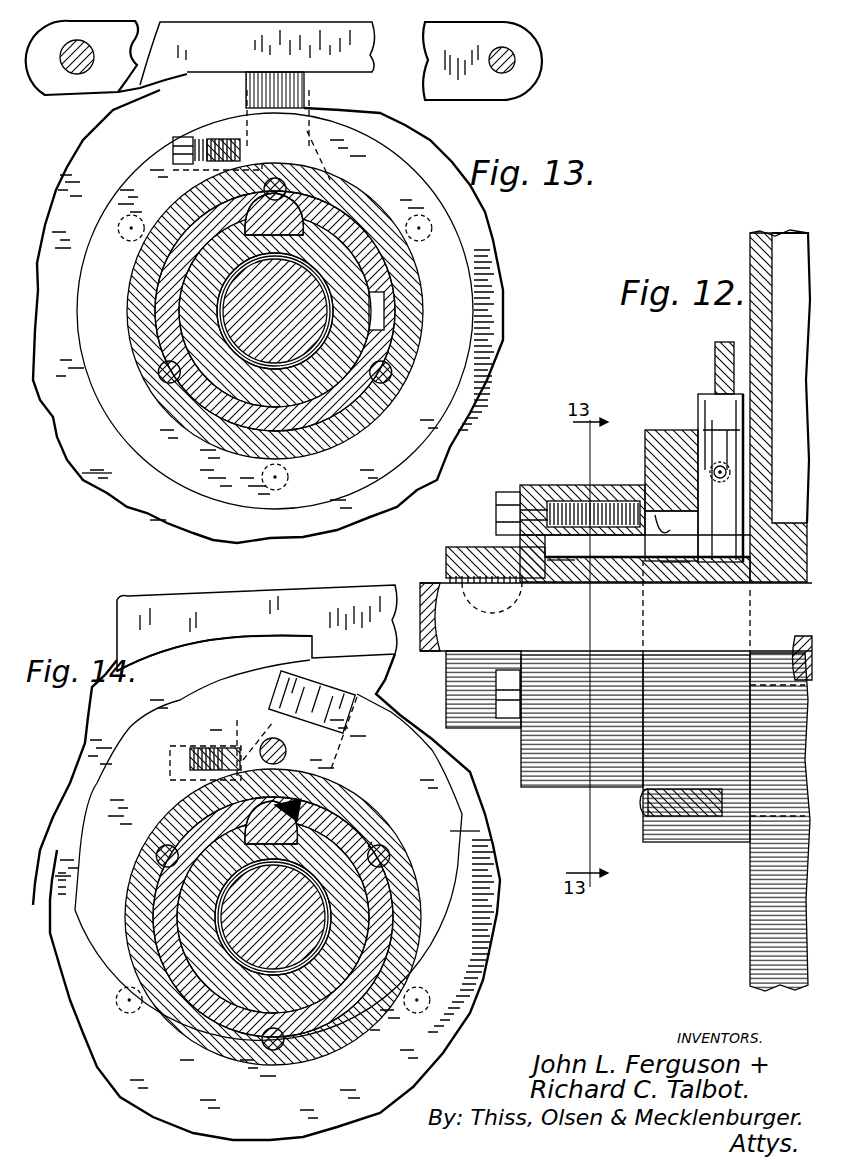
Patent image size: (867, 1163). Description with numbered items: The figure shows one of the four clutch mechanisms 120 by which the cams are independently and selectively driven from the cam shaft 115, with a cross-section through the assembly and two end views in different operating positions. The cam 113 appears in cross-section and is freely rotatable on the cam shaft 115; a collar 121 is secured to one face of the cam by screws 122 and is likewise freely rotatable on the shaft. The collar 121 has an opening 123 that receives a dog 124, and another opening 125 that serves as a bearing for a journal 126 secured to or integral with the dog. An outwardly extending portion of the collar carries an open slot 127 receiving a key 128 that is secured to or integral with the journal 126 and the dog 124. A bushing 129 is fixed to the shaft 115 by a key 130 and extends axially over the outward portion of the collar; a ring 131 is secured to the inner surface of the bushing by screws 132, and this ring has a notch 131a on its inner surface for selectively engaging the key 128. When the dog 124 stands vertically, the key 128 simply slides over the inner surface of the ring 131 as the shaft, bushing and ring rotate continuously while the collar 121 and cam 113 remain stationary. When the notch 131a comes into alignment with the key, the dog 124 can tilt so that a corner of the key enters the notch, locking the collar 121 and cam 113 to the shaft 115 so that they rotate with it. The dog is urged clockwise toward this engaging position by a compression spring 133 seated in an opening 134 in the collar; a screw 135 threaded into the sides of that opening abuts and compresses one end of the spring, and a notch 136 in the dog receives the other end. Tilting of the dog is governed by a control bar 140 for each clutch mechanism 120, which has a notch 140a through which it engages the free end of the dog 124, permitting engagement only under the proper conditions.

In FIG. 13, the cam 113 is at (284, 282).
In FIG. 14, the cam 113 is at (266, 897).
In FIG. 12, the cam 113 is at (752, 244).
In FIG. 13, the cam shaft 115 is at (275, 311).
In FIG. 14, the cam shaft 115 is at (273, 917).
In FIG. 12, the cam shaft 115 is at (558, 623).
In FIG. 12, the clutch mechanism 120 is at (604, 405).
In FIG. 13, the collar 121 is at (326, 311).
In FIG. 14, the collar 121 is at (331, 917).
In FIG. 12, the collar 121 is at (665, 430).
In FIG. 13, the screws 122 is at (292, 354).
In FIG. 14, the screws 122 is at (320, 864).
In FIG. 12, the screws 122 is at (646, 808).
In FIG. 14, the opening 123 is at (225, 748).
In FIG. 12, the opening 123 is at (704, 457).
In FIG. 13, the dog 124 is at (306, 92).
In FIG. 14, the dog 124 is at (360, 712).
In FIG. 12, the dog 124 is at (705, 394).
In FIG. 12, the opening 125 is at (685, 513).
In FIG. 12, the journal 126 is at (672, 562).
In FIG. 12, the open slot 127 is at (576, 562).
In FIG. 13, the key 128 is at (295, 290).
In FIG. 14, the key 128 is at (273, 907).
In FIG. 12, the key 128 is at (635, 558).
In FIG. 14, the bushing 129 is at (400, 828).
In FIG. 12, the bushing 129 is at (462, 549).
In FIG. 12, the key 130 is at (492, 609).
In FIG. 13, the ring 131 is at (309, 311).
In FIG. 14, the ring 131 is at (306, 917).
In FIG. 12, the ring 131 is at (620, 485).
In FIG. 13, the notch 131a is at (421, 305).
In FIG. 14, the notch 131a is at (342, 793).
In FIG. 13, the screws 132 is at (268, 289).
In FIG. 14, the screws 132 is at (300, 966).
In FIG. 12, the screws 132 is at (505, 492).
In FIG. 13, the compression spring 133 is at (232, 138).
In FIG. 12, the compression spring 133 is at (722, 487).
In FIG. 13, the opening 134 is at (208, 140).
In FIG. 13, the screw 135 is at (175, 150).
In FIG. 13, the notch 136 is at (262, 140).
In FIG. 13, the control bar 140 is at (257, 53).
In FIG. 14, the control bar 140 is at (360, 617).
In FIG. 12, the control bar 140 is at (724, 342).
In FIG. 14, the notch 140a is at (252, 636).